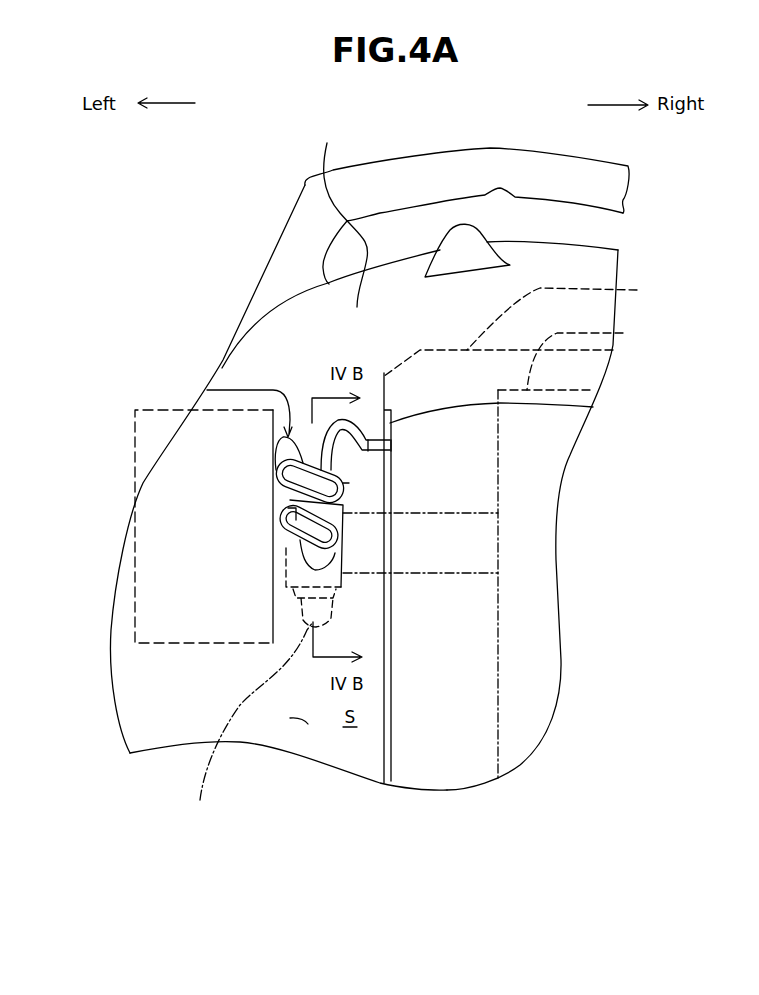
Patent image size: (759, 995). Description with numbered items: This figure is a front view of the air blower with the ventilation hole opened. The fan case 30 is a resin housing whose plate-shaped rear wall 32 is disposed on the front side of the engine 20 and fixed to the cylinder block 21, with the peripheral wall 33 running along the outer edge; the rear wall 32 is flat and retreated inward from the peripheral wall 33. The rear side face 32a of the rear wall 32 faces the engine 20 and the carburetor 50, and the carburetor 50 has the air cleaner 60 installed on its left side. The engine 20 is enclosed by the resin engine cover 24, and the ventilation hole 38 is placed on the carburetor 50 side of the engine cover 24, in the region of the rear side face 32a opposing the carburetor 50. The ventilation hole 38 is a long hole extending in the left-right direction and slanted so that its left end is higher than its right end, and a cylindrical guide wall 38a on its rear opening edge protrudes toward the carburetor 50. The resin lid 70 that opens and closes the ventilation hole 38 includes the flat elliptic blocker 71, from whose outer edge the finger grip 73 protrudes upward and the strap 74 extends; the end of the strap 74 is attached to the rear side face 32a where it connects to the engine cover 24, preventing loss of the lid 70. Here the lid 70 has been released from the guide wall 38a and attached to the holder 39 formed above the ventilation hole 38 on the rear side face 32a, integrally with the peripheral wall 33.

The engine 20 is at (579, 387).
The cylinder block 21 is at (623, 333).
The engine cover 24 is at (637, 290).
The fan case 30 is at (244, 274).
The rear wall 32 is at (517, 700).
The rear side face 32a is at (292, 718).
The peripheral wall 33 is at (341, 211).
The ventilation hole 38 is at (300, 540).
The guide wall 38a is at (300, 570).
The holder 39 is at (343, 483).
The carburetor 50 is at (250, 725).
The air cleaner 60 is at (145, 408).
The lid 70 is at (207, 390).
The blocker 71 is at (293, 478).
The finger grip 73 is at (280, 456).
The strap 74 is at (363, 453).